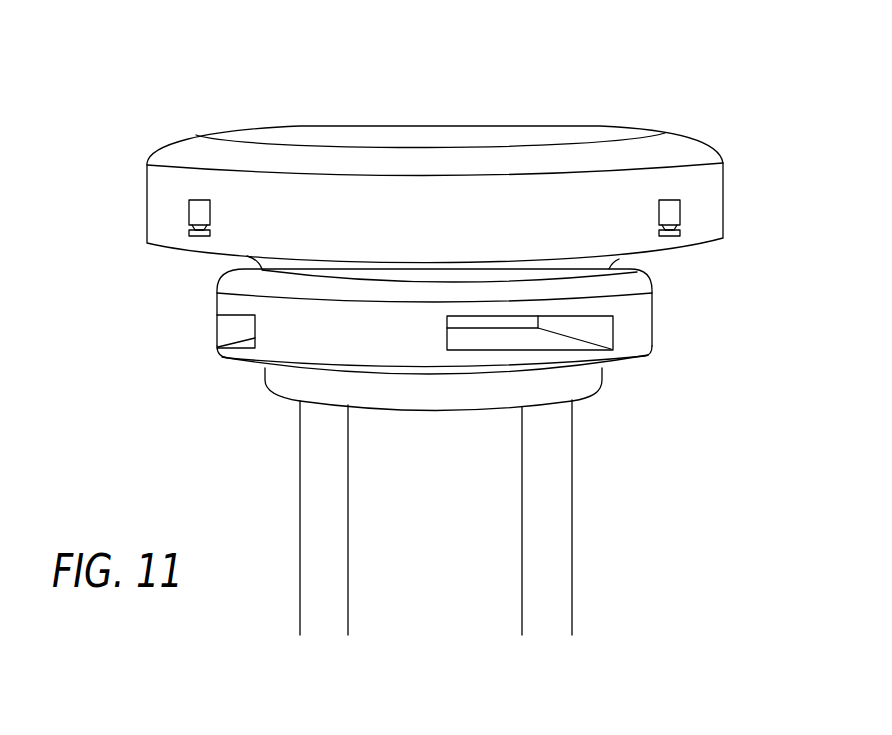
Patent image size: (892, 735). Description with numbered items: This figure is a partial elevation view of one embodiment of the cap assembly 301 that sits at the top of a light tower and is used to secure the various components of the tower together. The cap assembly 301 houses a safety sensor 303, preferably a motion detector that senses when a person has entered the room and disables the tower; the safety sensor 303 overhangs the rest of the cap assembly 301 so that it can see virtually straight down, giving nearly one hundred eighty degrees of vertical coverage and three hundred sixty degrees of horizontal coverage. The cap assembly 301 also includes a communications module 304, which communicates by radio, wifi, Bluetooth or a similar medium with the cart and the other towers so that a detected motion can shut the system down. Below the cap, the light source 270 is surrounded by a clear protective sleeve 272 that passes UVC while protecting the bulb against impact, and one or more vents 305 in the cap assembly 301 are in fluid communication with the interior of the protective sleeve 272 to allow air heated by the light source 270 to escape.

The cap assembly 301 is at (675, 100).
The safety sensor 303 is at (722, 223).
The communications module 304 is at (422, 133).
The vent 305 is at (235, 328).
The light source 270 is at (520, 577).
The protective sleeve 272 is at (571, 522).